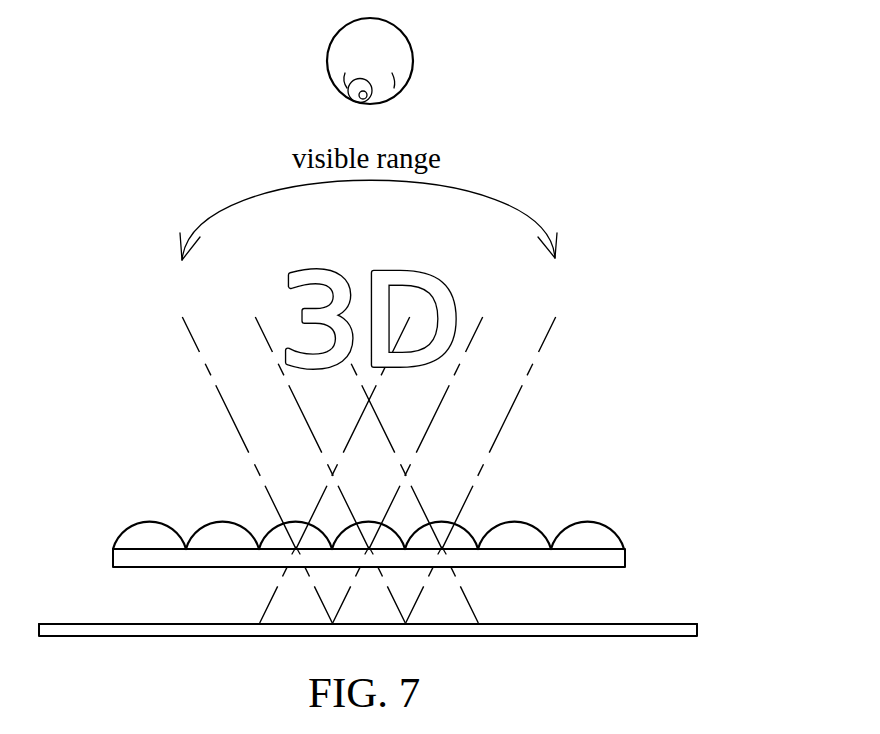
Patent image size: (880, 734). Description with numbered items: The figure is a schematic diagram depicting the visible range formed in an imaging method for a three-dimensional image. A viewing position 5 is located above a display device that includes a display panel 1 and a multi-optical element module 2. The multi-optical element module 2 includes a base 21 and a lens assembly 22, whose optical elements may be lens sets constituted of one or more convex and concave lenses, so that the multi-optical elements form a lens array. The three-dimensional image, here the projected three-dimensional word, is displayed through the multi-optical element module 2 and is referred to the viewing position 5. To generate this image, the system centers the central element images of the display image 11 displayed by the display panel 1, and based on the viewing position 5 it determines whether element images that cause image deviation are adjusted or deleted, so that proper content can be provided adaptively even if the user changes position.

The viewing position 5 is at (412, 43).
The multi-optical element module 2 is at (400, 517).
The lens assembly 22 is at (587, 538).
The base 21 is at (615, 556).
The display panel 1 is at (399, 609).
The display image 11 is at (657, 623).